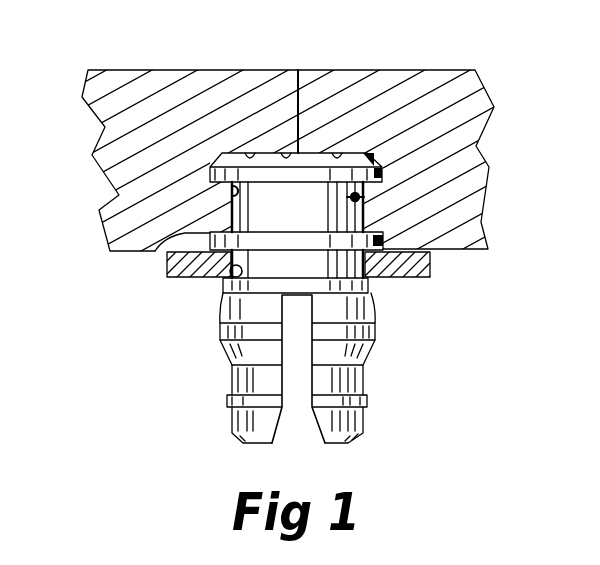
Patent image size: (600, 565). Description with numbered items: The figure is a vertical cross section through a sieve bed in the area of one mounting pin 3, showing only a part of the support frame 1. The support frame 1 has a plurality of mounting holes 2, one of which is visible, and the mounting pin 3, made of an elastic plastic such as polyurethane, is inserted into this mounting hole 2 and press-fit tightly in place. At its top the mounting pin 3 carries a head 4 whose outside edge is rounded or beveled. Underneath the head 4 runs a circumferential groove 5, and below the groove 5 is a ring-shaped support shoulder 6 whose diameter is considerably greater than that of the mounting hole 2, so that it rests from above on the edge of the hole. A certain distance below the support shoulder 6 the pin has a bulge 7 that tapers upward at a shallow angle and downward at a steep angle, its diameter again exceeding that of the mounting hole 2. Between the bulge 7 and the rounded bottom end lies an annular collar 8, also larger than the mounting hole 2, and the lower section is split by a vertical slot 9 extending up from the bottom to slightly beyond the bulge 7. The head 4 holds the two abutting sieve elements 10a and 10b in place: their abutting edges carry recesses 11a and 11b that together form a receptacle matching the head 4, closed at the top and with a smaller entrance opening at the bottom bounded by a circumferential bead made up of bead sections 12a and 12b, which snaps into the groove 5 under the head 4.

The support frame 1 is at (167, 276).
The mounting hole 2 is at (230, 278).
The mounting pin 3 is at (207, 350).
The head 4 is at (286, 152).
The circumferential groove 5 is at (245, 220).
The support shoulder 6 is at (157, 251).
The bulge 7 is at (375, 332).
The annular collar 8 is at (368, 399).
The vertical slot 9 is at (312, 386).
The sieve element 10a is at (333, 77).
The sieve element 10b is at (262, 78).
The recess 11a is at (337, 152).
The recess 11b is at (248, 152).
The bead section 12a is at (362, 197).
The bead section 12b is at (233, 191).